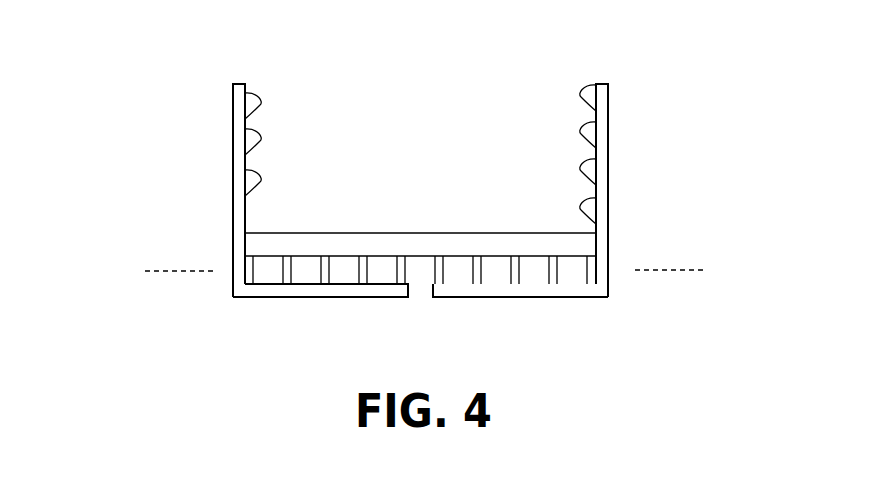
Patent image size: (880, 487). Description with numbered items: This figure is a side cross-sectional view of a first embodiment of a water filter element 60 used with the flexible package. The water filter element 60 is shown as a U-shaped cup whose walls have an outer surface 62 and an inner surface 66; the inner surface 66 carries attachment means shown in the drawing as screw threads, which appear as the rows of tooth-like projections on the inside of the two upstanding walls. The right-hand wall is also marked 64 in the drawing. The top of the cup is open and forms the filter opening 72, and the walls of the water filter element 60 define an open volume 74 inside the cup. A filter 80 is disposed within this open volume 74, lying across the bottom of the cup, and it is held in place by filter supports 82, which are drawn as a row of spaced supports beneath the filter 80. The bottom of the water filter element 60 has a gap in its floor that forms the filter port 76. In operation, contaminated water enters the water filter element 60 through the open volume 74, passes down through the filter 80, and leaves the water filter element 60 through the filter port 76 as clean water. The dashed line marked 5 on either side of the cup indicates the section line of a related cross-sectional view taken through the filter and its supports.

The water filter element 60 is at (138, 95).
The filter opening 72 is at (440, 76).
The outer surface 62 is at (232, 195).
The right side wall 64 is at (597, 113).
The inner surface 66 is at (253, 105).
The open volume 74 is at (441, 184).
The filter 80 is at (566, 245).
The filter supports 82 is at (521, 272).
The filter port 76 is at (420, 283).
The section line 5- 5 is at (428, 267).